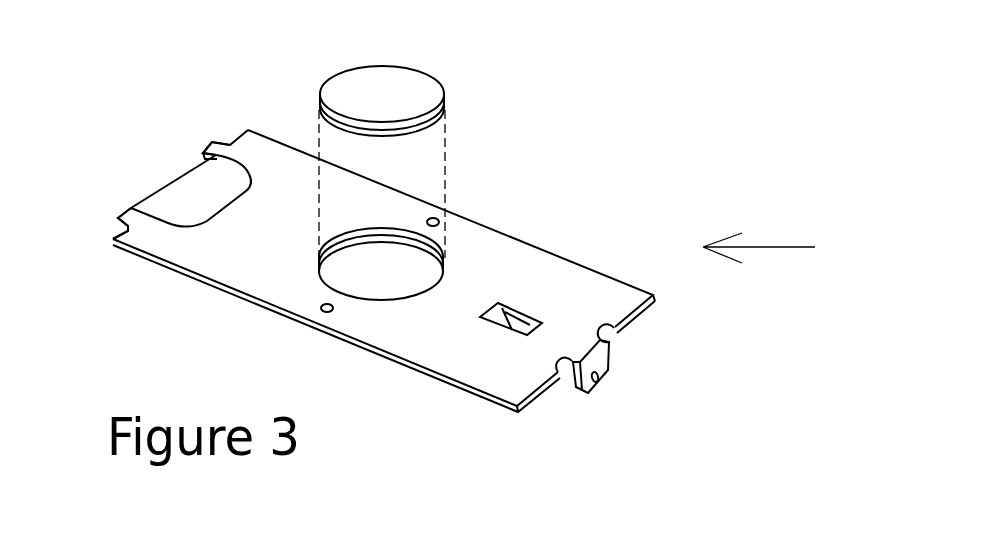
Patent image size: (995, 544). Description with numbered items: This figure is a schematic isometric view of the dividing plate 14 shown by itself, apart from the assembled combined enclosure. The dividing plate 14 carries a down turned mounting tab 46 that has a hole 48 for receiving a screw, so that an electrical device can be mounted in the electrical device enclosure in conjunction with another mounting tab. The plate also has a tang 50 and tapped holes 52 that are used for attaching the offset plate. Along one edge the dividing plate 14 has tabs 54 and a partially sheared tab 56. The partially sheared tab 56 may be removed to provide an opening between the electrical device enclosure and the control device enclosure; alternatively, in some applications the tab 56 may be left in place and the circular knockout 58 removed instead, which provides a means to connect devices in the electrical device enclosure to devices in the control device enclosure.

The dividing plate 14 is at (782, 247).
The down turned mounting tab 46 is at (612, 352).
The hole 48 is at (599, 384).
The tang 50 is at (507, 308).
The tapped holes 52 is at (433, 218).
The tabs 54 is at (213, 142).
The partially sheared tab 56 is at (195, 187).
The circular knockout 58 is at (437, 80).